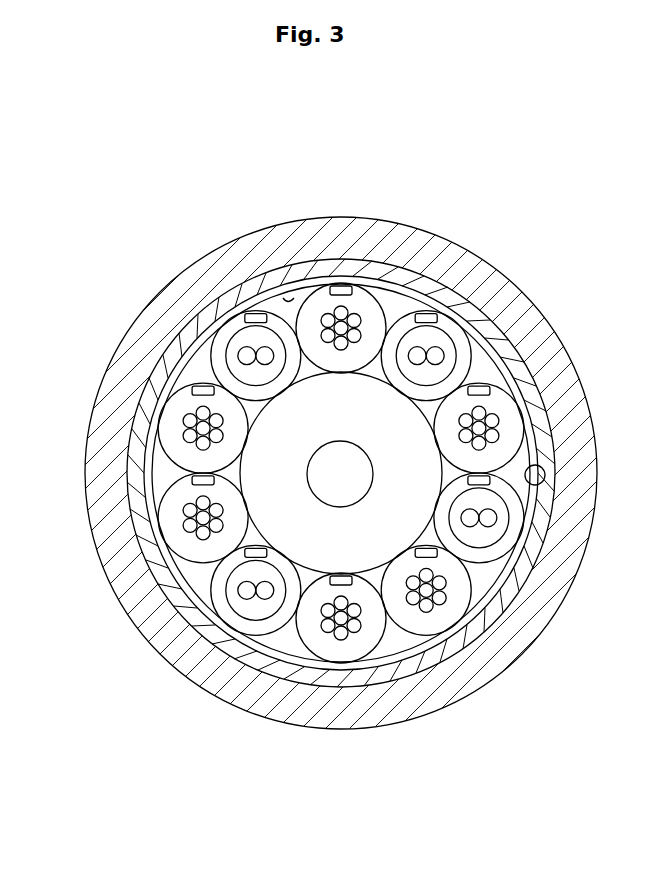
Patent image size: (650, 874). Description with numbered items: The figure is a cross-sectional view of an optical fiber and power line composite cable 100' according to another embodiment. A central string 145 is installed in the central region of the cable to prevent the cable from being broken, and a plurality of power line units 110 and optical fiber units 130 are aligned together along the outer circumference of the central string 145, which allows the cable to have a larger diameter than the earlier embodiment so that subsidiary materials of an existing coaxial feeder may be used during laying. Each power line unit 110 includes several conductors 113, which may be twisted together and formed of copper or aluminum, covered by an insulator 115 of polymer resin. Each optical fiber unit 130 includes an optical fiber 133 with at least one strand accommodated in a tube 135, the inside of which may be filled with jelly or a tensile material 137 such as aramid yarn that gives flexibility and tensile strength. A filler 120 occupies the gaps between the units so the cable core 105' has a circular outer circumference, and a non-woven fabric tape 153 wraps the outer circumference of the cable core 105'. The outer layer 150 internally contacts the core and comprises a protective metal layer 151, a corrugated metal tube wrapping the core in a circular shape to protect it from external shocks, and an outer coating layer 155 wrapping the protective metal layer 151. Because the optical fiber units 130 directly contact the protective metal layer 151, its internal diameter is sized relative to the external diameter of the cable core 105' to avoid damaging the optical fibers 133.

The optical fiber and power line composite cable 100' is at (325, 501).
The cable core 105' is at (410, 414).
The power line unit 110 is at (378, 296).
The conductor 113 is at (344, 324).
The insulator 115 is at (325, 300).
The filler 120 is at (288, 296).
The optical fiber unit 130 is at (248, 308).
The optical fiber 133 is at (240, 337).
The tube 135 is at (218, 360).
The tensile material 137 is at (245, 353).
The central string 145 is at (342, 477).
The outer layer 150 is at (402, 811).
The protective metal layer 151 is at (325, 681).
The non-woven fabric tape 153 is at (198, 617).
The outer coating layer 155 is at (387, 698).